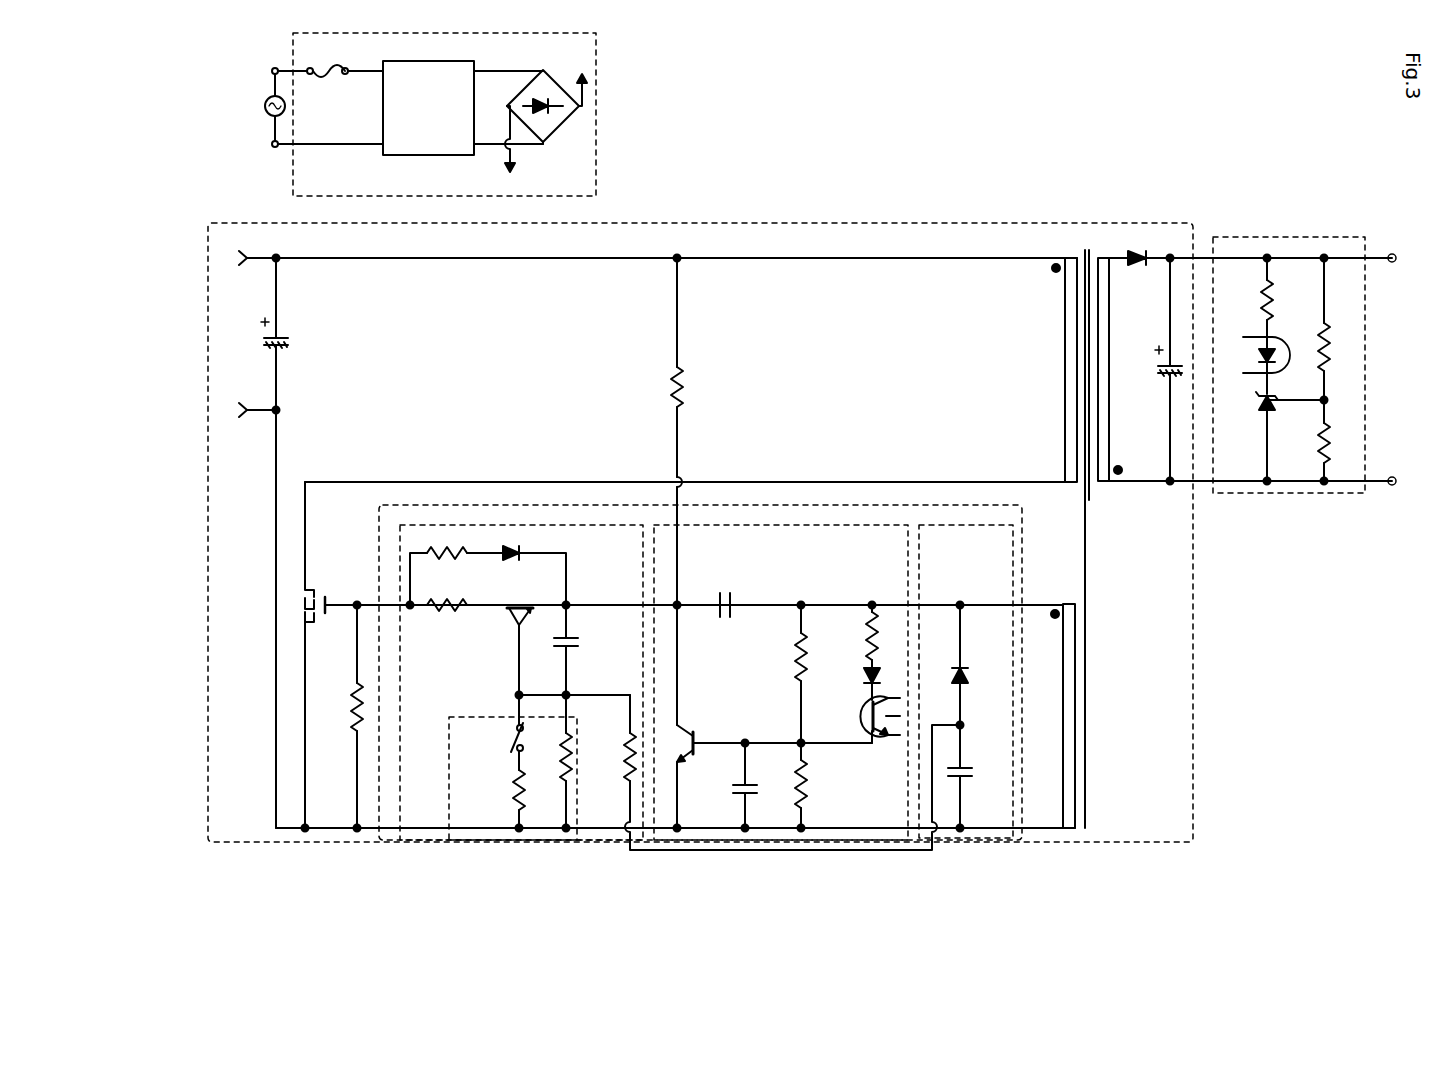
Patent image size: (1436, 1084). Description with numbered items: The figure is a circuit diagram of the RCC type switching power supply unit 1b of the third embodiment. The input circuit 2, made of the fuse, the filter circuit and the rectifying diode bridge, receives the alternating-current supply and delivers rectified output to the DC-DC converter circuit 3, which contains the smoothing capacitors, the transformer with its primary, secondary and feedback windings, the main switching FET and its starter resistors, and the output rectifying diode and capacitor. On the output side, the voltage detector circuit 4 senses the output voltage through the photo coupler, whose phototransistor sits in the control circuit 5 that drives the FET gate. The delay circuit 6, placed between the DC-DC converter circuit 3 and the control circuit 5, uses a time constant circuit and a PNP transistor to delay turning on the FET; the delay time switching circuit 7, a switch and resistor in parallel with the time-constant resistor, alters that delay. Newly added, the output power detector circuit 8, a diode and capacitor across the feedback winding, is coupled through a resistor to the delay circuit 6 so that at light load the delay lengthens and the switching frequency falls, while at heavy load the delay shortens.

The switching power supply unit 1b is at (1270, 70).
The input circuit 2 is at (598, 130).
The DC-DC converter circuit 3 is at (932, 238).
The voltage detector circuit 4 is at (1289, 338).
The control circuit 5 is at (735, 843).
The delay circuit 6 is at (423, 843).
The delay time switching circuit 7 is at (473, 843).
The output power detector circuit 8 is at (985, 843).